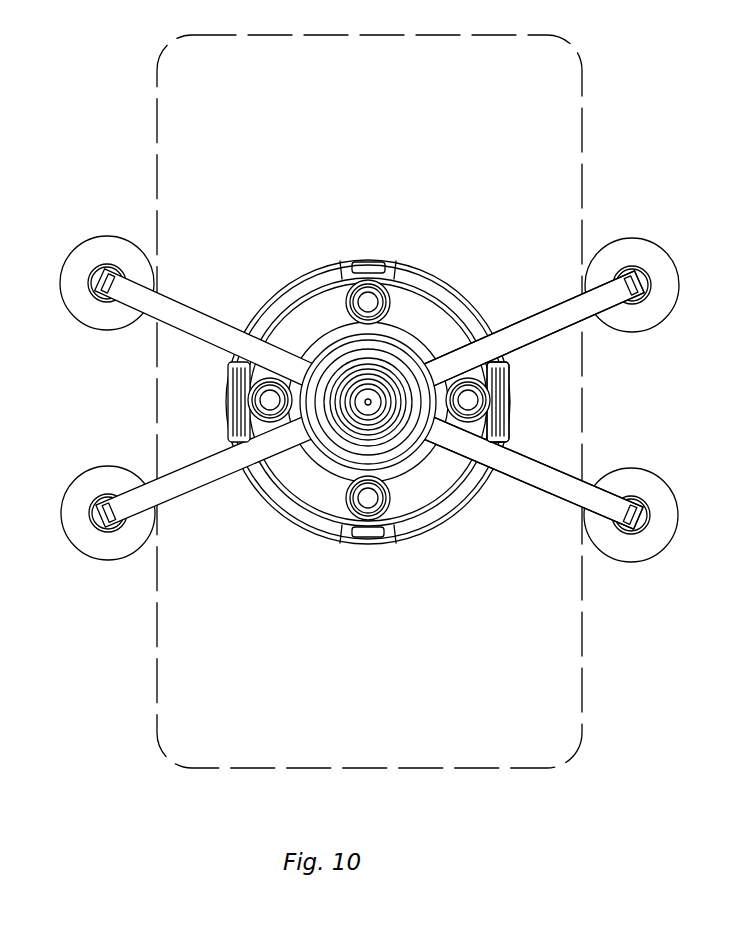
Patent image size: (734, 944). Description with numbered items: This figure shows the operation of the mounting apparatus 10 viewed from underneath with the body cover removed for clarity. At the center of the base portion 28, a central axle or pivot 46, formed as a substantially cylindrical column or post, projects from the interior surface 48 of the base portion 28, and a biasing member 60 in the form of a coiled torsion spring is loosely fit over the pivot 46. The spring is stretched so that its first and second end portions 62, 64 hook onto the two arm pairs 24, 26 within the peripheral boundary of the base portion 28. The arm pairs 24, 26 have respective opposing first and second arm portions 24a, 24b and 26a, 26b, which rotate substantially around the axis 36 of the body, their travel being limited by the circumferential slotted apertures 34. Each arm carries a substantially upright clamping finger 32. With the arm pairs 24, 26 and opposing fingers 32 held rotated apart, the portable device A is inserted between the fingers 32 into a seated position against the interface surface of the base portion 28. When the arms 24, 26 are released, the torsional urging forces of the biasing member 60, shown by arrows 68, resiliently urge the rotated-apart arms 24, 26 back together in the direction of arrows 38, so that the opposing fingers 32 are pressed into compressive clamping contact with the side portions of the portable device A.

The mounting apparatus 10 is at (107, 136).
The portable device A is at (582, 110).
The arm 24 is at (590, 325).
The first arm portion 24a is at (182, 462).
The second arm portion 24b is at (562, 300).
The arm 26 is at (555, 468).
The first arm portion 26a is at (570, 500).
The second arm portion 26b is at (148, 316).
The base portion 28 is at (228, 402).
The clamping finger 32 is at (78, 310).
The circumferential slotted aperture 34 is at (420, 277).
The axis 36 is at (368, 405).
The arrows 38 is at (125, 235).
The central axle or pivot 46 is at (350, 378).
The interior surface 48 is at (293, 335).
The biasing member 60 is at (323, 440).
The first end portion 62 is at (509, 425).
The second end portion 64 is at (509, 376).
The arrows 68 is at (512, 301).